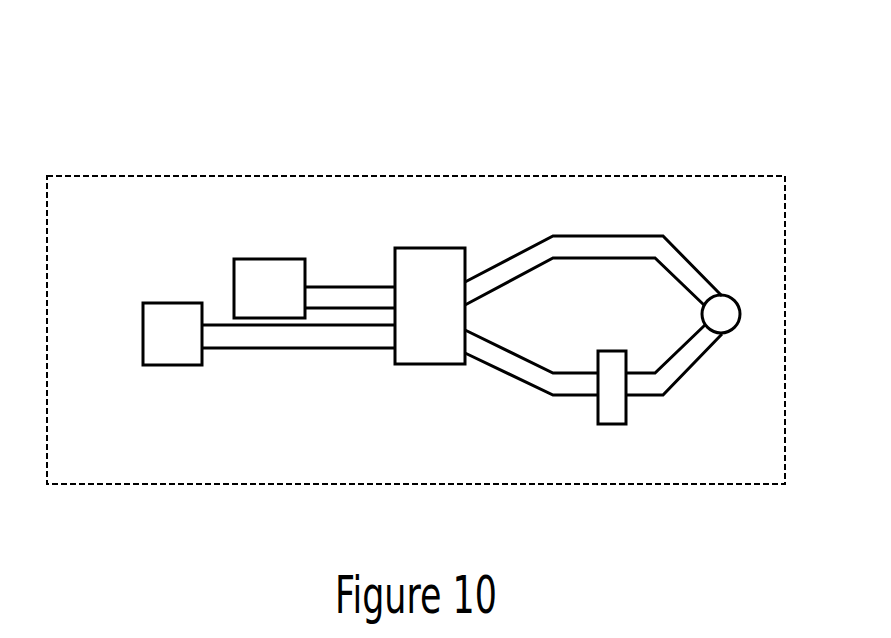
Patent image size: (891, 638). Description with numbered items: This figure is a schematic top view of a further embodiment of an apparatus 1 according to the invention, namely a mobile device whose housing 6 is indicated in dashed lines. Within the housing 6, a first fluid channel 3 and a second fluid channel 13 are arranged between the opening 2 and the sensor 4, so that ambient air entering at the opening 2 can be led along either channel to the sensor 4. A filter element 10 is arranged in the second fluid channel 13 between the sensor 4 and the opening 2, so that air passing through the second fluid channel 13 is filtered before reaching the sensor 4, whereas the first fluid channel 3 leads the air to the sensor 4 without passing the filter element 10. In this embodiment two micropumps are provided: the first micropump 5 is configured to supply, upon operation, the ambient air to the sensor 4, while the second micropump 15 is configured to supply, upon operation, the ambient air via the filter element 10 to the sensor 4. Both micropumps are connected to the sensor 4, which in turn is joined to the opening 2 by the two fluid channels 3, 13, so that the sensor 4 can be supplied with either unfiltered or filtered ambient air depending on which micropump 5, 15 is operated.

The apparatus 1 is at (119, 127).
The opening 2 is at (740, 314).
The first fluid channel 3 is at (612, 236).
The sensor 4 is at (430, 247).
The first micropump 5 is at (272, 259).
The housing 6 is at (785, 373).
The filter element 10 is at (612, 425).
The second fluid channel 13 is at (693, 363).
The second micropump 15 is at (172, 302).